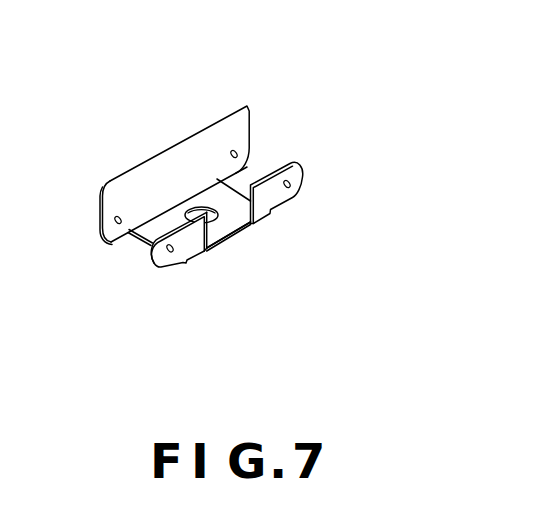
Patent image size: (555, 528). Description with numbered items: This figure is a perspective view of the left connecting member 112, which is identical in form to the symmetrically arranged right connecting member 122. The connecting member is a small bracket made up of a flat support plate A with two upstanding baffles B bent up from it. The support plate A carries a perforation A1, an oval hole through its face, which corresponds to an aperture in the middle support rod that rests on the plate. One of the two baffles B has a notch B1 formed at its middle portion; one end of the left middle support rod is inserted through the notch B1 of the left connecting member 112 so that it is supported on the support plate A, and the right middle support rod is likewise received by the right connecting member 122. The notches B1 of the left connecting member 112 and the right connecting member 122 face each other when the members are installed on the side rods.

The left connecting member 112 is at (262, 194).
The right connecting member 122 is at (262, 194).
The support plate A is at (163, 222).
The perforation A1 is at (210, 213).
The baffle B is at (190, 158).
The notch B1 is at (233, 241).